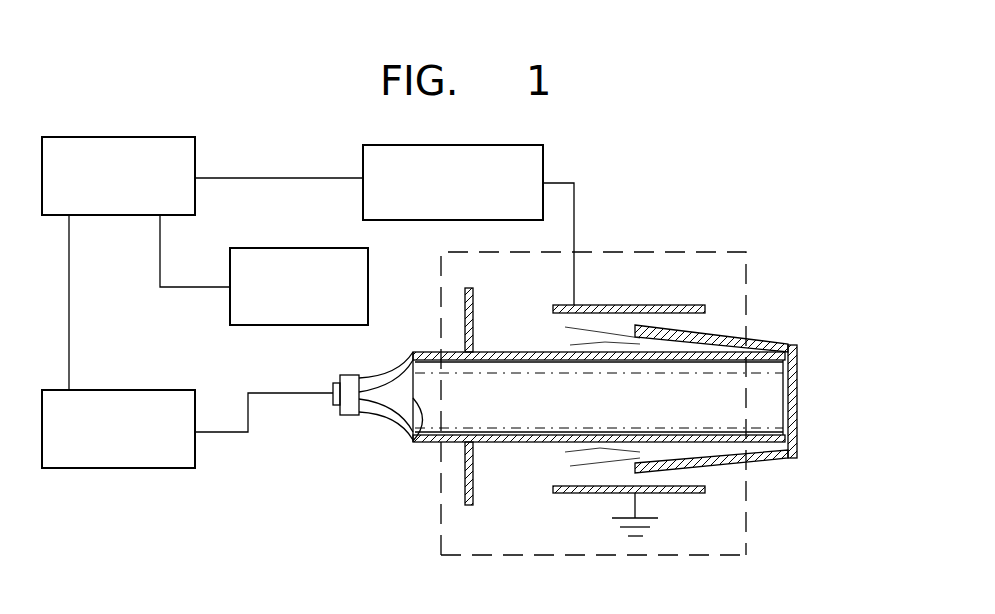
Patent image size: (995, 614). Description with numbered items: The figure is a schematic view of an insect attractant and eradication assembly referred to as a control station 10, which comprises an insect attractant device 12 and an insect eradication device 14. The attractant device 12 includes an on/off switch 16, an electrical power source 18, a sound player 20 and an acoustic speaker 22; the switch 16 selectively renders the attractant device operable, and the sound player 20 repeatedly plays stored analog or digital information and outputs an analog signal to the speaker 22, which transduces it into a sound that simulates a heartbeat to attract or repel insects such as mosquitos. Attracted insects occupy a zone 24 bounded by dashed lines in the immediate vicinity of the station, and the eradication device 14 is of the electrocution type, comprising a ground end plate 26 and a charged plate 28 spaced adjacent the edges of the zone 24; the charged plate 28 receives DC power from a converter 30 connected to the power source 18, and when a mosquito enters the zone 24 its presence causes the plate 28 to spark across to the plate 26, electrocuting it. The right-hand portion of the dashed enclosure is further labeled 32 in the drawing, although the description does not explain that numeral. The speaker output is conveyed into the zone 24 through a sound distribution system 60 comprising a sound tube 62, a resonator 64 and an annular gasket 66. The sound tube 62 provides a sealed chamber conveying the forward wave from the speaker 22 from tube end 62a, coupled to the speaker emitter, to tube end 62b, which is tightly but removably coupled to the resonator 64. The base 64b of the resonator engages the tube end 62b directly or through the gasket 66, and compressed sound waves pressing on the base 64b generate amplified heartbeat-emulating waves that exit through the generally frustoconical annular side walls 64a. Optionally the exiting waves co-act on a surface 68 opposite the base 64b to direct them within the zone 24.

The control station 10 is at (640, 202).
The insect attractant device 12 is at (216, 462).
The insect eradication device 14 is at (564, 492).
The on/off switch 16 is at (261, 296).
The electrical power source 18 is at (97, 137).
The sound player 20 is at (147, 462).
The acoustic speaker 22 is at (350, 378).
The attractant zone 24 is at (720, 563).
The ground end plate 26 is at (690, 493).
The charged plate 28 is at (645, 305).
The converter 30 is at (414, 175).
The chamber enclosure 32 is at (746, 292).
The sound distribution system 60 is at (712, 405).
The sound tube 62 is at (505, 406).
The tube end 62a is at (420, 441).
The tube end 62b is at (786, 400).
The resonator 64 is at (824, 405).
The annular side walls 64a is at (780, 340).
The base 64b is at (797, 384).
The annular gasket 66 is at (793, 367).
The surface 68 is at (472, 322).